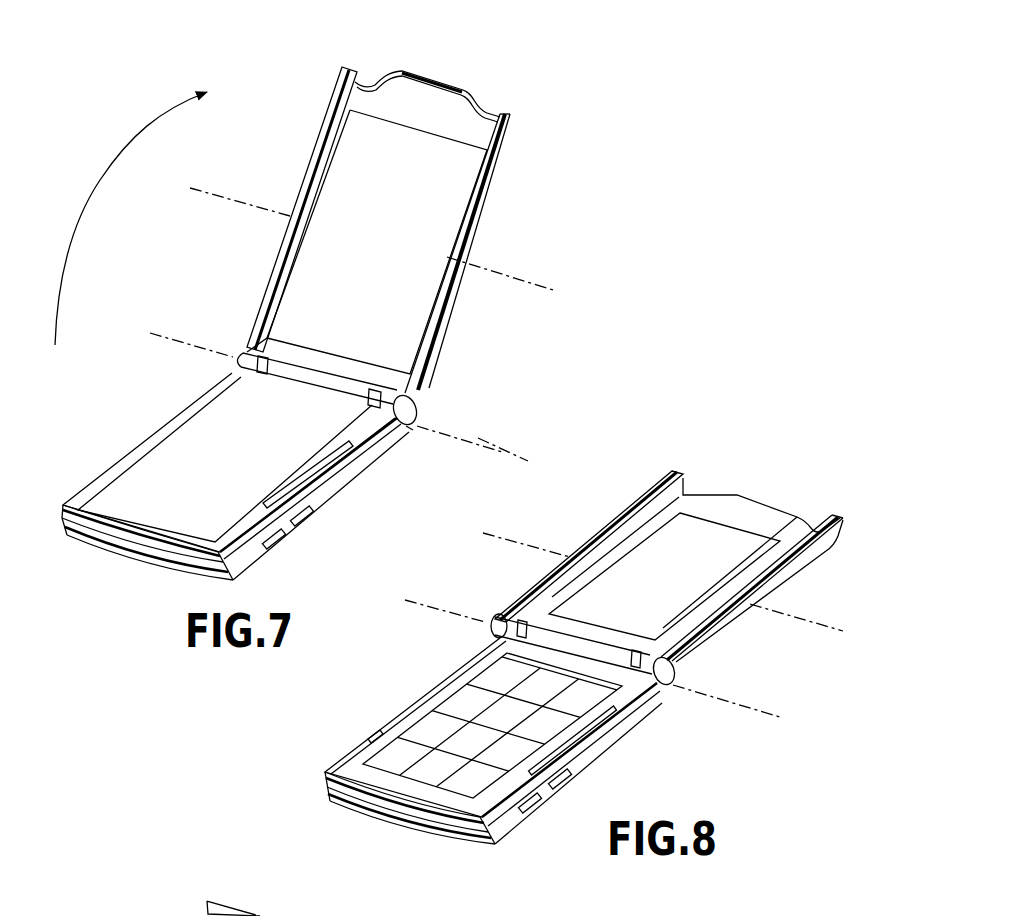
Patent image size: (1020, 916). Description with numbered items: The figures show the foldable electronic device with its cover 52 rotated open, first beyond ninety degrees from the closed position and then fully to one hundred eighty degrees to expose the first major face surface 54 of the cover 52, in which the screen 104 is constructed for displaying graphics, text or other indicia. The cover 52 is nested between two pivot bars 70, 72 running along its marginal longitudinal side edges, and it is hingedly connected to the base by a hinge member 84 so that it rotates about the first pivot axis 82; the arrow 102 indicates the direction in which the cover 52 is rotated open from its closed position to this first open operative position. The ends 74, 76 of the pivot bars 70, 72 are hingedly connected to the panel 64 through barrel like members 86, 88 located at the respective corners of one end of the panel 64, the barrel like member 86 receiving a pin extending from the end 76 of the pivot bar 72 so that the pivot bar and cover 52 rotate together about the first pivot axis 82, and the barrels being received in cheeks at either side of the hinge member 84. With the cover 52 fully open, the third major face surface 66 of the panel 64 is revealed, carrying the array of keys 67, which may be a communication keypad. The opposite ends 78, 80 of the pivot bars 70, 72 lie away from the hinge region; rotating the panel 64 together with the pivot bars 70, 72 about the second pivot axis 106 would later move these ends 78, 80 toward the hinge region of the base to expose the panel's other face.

In FIG. 8, the cover 52 is at (735, 480).
In FIG. 8, the first major face surface 54 is at (778, 531).
In FIG. 8, the panel 64 is at (494, 808).
In FIG. 7, the third major face surface 66 is at (171, 452).
In FIG. 8, the third major face surface 66 is at (366, 758).
In FIG. 8, the array of keys 67 is at (410, 784).
In FIG. 7, the pivot bar 70 is at (321, 122).
In FIG. 8, the pivot bar 70 is at (611, 507).
In FIG. 7, the pivot bar 72 is at (505, 192).
In FIG. 8, the pivot bar 72 is at (812, 580).
In FIG. 7, the end of pivot bar 74 is at (236, 357).
In FIG. 7, the end of pivot bar 76 is at (405, 427).
In FIG. 7, the end of pivot bar 78 is at (338, 68).
In FIG. 8, the end of pivot bar 78 is at (671, 466).
In FIG. 7, the end of pivot bar 80 is at (515, 128).
In FIG. 8, the end of pivot bar 80 is at (855, 512).
In FIG. 7, the first pivot axis 82 is at (472, 448).
In FIG. 8, the first pivot axis 82 is at (755, 715).
In FIG. 7, the hinge member 84 is at (350, 388).
In FIG. 7, the barrel like member 86 is at (412, 387).
In FIG. 7, the barrel like member 88 is at (250, 352).
In FIG. 7, the arrow 102 is at (89, 200).
In FIG. 8, the screen 104 is at (623, 576).
In FIG. 7, the second pivot axis 106 is at (528, 281).
In FIG. 8, the second pivot axis 106 is at (796, 624).